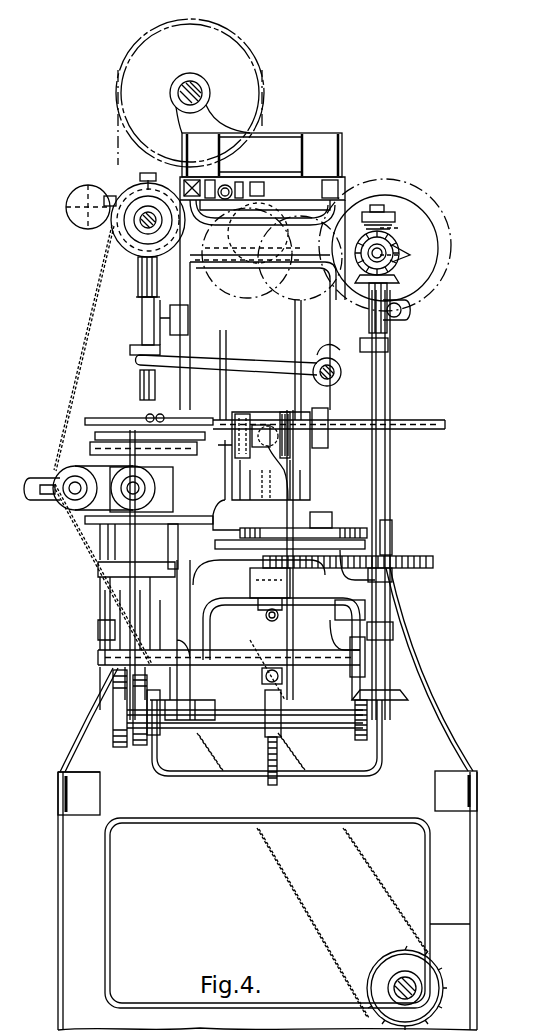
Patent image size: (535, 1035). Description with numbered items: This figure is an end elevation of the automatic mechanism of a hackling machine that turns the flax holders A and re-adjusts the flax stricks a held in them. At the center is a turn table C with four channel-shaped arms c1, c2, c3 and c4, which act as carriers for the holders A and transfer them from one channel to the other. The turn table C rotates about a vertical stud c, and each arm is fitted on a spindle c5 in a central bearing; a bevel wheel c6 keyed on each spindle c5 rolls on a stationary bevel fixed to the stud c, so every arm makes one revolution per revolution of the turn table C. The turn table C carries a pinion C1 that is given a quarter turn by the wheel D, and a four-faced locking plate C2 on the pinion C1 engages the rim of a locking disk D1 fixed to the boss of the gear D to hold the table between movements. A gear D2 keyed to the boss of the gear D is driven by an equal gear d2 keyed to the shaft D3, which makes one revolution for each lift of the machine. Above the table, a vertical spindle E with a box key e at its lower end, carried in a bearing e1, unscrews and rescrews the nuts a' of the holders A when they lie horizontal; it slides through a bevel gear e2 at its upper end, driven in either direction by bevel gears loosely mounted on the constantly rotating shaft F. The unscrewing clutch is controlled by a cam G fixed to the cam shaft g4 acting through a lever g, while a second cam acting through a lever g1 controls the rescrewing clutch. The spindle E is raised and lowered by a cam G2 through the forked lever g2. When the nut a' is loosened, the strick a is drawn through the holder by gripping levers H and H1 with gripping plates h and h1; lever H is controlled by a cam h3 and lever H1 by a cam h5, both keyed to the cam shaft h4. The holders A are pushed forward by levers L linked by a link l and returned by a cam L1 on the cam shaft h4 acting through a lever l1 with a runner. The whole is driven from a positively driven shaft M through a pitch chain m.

The lever g is at (295, 220).
The lever g1 is at (91, 200).
The forked lever g2 is at (238, 370).
The cam shaft g4 is at (382, 253).
The cam G is at (404, 222).
The cam G2 is at (385, 245).
The nut a' is at (433, 262).
The constantly rotating shaft F is at (144, 229).
The box key e is at (140, 384).
The bearing e1 is at (140, 300).
The bevel gear e2 is at (136, 277).
The vertical spindle E is at (142, 323).
The pitch chain m is at (372, 866).
The flax holder A is at (60, 467).
The flax strick a is at (160, 412).
The gripping plate h is at (188, 424).
The bevel wheel c6 is at (287, 416).
The arm c3 is at (258, 424).
The spindle c5 is at (290, 448).
The arm c4 is at (396, 422).
The arm c2 is at (178, 456).
The gripping lever H is at (124, 489).
The gripping plate h1 is at (182, 522).
The arm c1 is at (264, 484).
The vertical stud c is at (264, 486).
The turn table C is at (300, 482).
The pinion C1 is at (231, 516).
The locking plate C2 is at (184, 546).
The lever L is at (276, 633).
The wheel D is at (338, 532).
The locking disk D1 is at (386, 540).
The shaft D3 is at (384, 363).
The gear d2 is at (433, 562).
The link l is at (265, 617).
The gear D2 is at (295, 598).
The lever l1 is at (285, 681).
The cam shaft h4 is at (305, 705).
The cam h5 is at (118, 700).
The cam h3 is at (140, 745).
The cam L1 is at (265, 737).
The driving shaft M is at (398, 983).
The gripping lever H1 is at (139, 575).